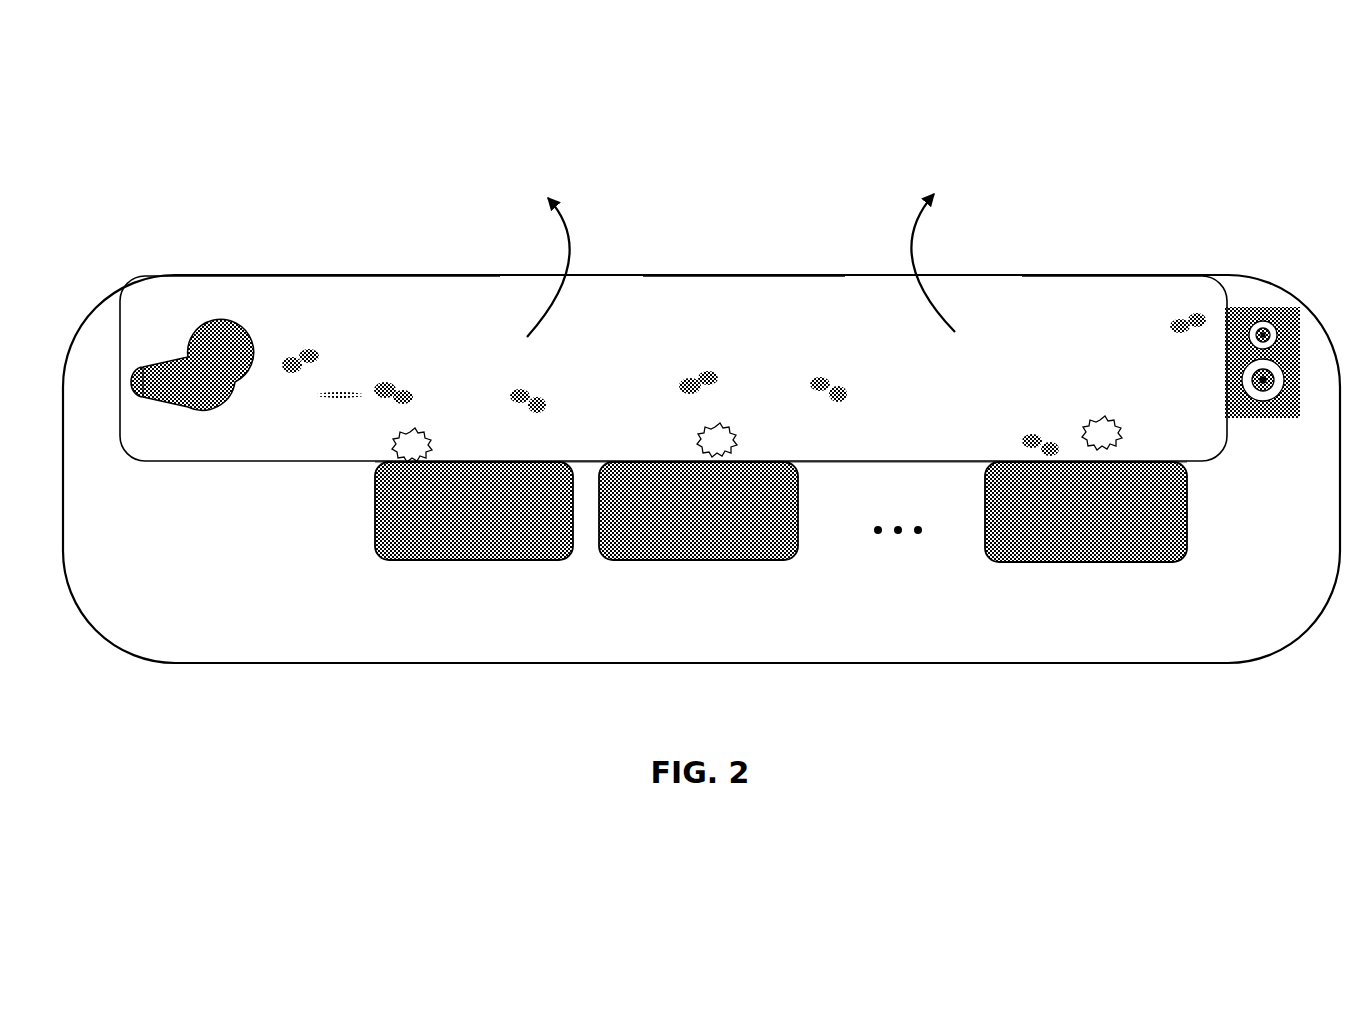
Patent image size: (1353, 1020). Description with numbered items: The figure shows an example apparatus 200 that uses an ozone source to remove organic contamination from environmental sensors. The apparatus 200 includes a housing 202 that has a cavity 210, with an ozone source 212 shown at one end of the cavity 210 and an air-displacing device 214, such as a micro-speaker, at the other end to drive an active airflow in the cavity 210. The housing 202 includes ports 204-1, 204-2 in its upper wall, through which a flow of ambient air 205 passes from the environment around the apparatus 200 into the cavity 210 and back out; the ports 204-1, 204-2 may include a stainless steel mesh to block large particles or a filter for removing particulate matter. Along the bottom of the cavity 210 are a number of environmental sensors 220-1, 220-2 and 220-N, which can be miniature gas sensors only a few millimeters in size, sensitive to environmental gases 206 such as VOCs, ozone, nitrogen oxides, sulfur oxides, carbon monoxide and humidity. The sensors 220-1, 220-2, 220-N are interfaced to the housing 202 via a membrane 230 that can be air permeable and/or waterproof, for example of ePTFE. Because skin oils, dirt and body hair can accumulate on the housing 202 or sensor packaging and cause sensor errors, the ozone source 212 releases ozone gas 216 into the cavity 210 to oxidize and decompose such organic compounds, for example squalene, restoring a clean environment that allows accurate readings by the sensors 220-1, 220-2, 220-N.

The apparatus 200 is at (196, 150).
The housing 202 is at (1141, 276).
The port 204-1 is at (538, 250).
The port 204-2 is at (968, 243).
The flow of ambient air 205 is at (572, 242).
The environmental gases 206 is at (735, 425).
The cavity 210 is at (744, 297).
The ozone source 212 is at (222, 350).
The air-displacing device 214 is at (1270, 307).
The ozone gas 216 is at (404, 380).
The environmental sensor 220-1 is at (474, 511).
The environmental sensor 220-2 is at (698, 511).
The environmental sensor 220-N is at (1086, 512).
The membrane 230 is at (1205, 480).